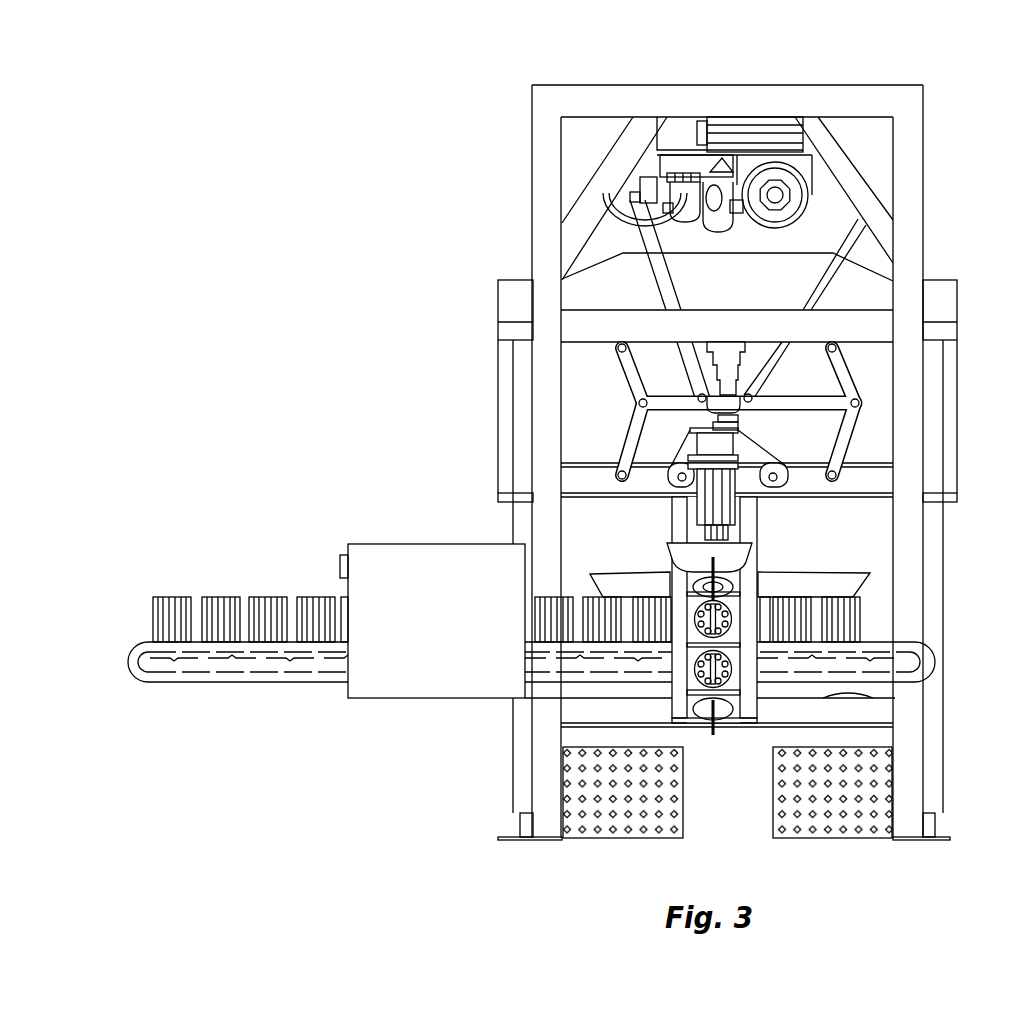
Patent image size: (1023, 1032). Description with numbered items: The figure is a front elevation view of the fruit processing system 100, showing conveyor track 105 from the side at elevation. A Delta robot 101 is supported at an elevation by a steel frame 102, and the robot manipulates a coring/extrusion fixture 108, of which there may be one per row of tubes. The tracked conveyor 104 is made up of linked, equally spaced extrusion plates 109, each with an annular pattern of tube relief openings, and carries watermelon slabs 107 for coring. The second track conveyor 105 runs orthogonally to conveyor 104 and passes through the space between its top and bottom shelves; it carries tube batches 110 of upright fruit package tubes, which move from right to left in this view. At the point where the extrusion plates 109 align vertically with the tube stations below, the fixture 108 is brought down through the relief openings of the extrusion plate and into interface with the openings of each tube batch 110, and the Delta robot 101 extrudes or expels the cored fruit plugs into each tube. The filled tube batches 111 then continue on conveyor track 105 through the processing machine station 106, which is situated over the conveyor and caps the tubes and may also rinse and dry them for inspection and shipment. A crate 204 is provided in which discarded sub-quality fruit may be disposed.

The fruit processing system 100 is at (338, 320).
The Delta robot 101 is at (740, 84).
The steel frame 102 is at (531, 200).
The tracked conveyor 104 is at (773, 583).
The second track conveyor 105 is at (270, 683).
The processing machine station 106 is at (433, 543).
The watermelon slabs 107 is at (663, 543).
The coring/extrusion fixture 108 is at (776, 478).
The extrusion plates 109 is at (690, 668).
The tube batches 110 is at (860, 632).
The filled tube batches 111 is at (317, 597).
The crate 204 is at (633, 747).